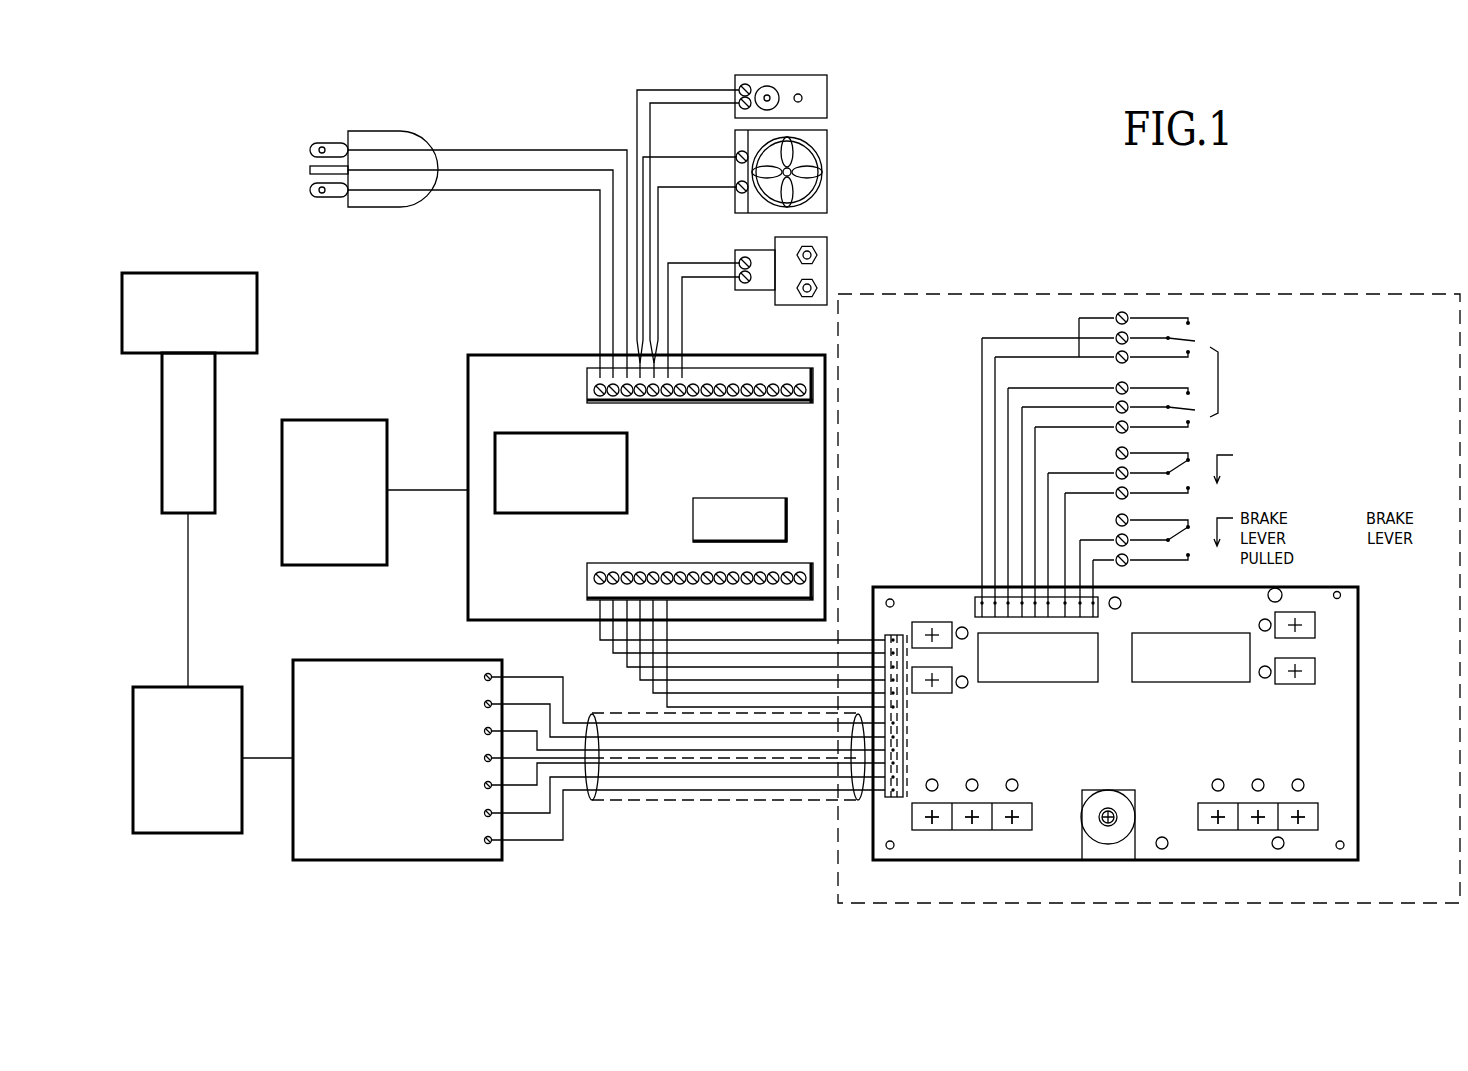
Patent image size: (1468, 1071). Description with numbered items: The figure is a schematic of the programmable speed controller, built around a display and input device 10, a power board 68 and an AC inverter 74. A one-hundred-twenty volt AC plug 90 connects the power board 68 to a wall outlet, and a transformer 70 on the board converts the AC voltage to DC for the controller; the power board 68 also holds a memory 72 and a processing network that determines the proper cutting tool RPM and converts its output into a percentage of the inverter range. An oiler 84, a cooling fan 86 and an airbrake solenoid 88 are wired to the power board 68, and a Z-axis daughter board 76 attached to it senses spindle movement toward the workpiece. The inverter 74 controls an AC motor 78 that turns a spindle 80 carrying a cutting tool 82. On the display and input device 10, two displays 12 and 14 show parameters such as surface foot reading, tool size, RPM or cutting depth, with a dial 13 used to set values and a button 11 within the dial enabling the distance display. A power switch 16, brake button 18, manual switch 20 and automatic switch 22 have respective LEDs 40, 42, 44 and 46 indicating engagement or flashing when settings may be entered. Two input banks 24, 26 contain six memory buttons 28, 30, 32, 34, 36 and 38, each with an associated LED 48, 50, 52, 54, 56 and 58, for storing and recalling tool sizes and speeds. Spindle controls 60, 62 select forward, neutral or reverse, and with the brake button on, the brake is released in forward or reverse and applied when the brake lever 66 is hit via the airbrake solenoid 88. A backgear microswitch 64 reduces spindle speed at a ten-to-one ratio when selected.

The display and input device 10 is at (1358, 792).
The button 11 is at (1098, 817).
The display 12 is at (1200, 682).
The dial 13 is at (1135, 812).
The display 14 is at (1070, 682).
The power switch 16 is at (935, 622).
The brake button 18 is at (940, 693).
The manual switch 20 is at (1315, 620).
The automatic switch 22 is at (1315, 668).
The input bank 24 is at (1054, 776).
The input bank 26 is at (1180, 775).
The memory button 28 is at (932, 830).
The memory button 30 is at (972, 830).
The memory button 32 is at (1012, 830).
The memory button 34 is at (1218, 830).
The memory button 36 is at (1258, 830).
The memory button 38 is at (1298, 830).
The LED 40 is at (962, 627).
The LED 42 is at (965, 688).
The LED 44 is at (1260, 622).
The LED 46 is at (1260, 678).
The LED 48 is at (938, 781).
The LED 50 is at (978, 781).
The LED 52 is at (1018, 781).
The LED 54 is at (1220, 779).
The LED 56 is at (1260, 779).
The LED 58 is at (1300, 779).
The spindle control 60 is at (1079, 327).
The spindle control 62 is at (1293, 397).
The backgear microswitch 64 is at (1155, 453).
The brake lever 66 is at (1180, 562).
The power board 68 is at (468, 604).
The transformer 70 is at (538, 433).
The memory 72 is at (693, 526).
The AC inverter 74 is at (333, 660).
The Z-axis daughter board 76 is at (333, 420).
The AC motor 78 is at (207, 687).
The spindle 80 is at (215, 430).
The cutting tool 82 is at (208, 273).
The oiler 84 is at (827, 84).
The cooling fan 86 is at (827, 140).
The airbrake solenoid 88 is at (827, 245).
The 120 volt AC plug 90 is at (438, 128).